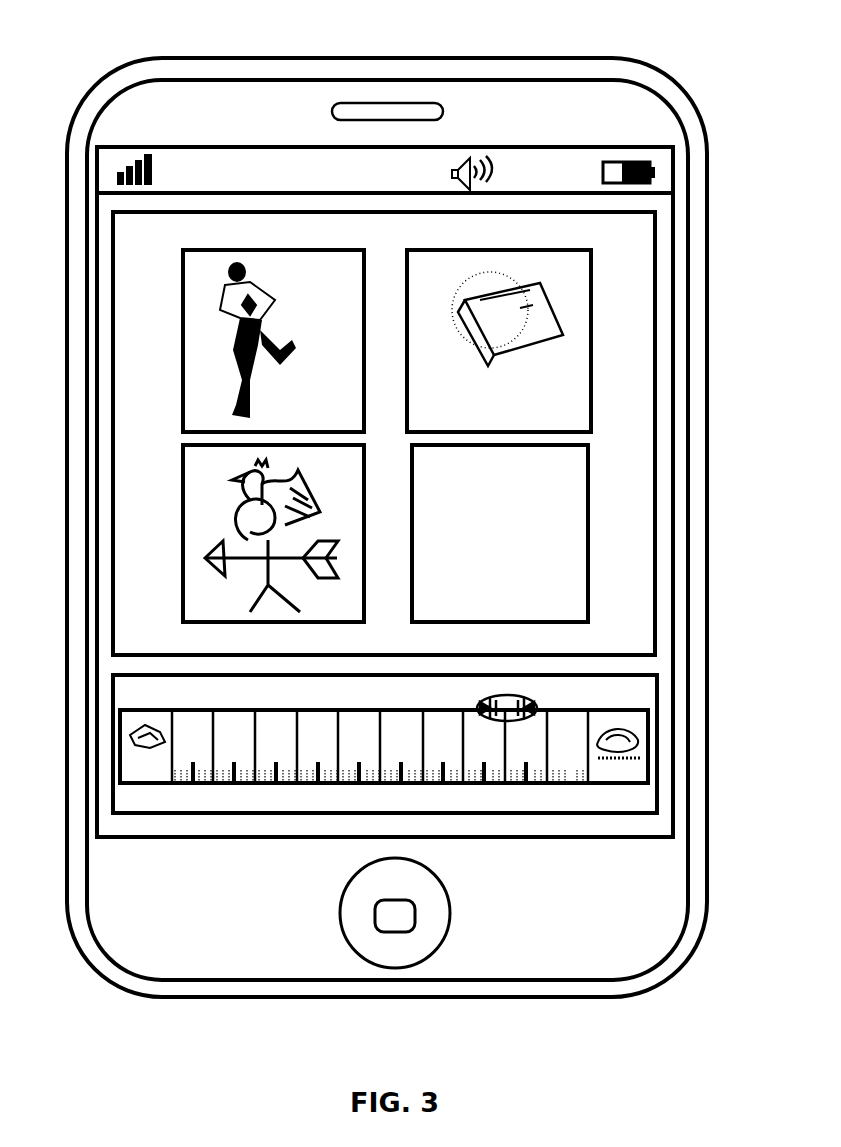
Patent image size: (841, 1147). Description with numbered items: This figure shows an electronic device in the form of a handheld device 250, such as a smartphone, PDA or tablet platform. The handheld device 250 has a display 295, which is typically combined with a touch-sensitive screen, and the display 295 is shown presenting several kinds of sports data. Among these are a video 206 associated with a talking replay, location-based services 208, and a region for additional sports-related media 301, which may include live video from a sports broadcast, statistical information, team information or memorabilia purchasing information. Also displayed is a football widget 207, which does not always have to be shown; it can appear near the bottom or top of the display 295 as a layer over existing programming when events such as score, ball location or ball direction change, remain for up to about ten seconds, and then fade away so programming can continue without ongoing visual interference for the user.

The handheld device 250 is at (660, 48).
The display 295 is at (667, 286).
The video associated with a talking replay 206 is at (246, 250).
The location-based services 208 is at (494, 250).
The additional sports-related media 301 is at (518, 516).
The football widget 207 is at (627, 721).